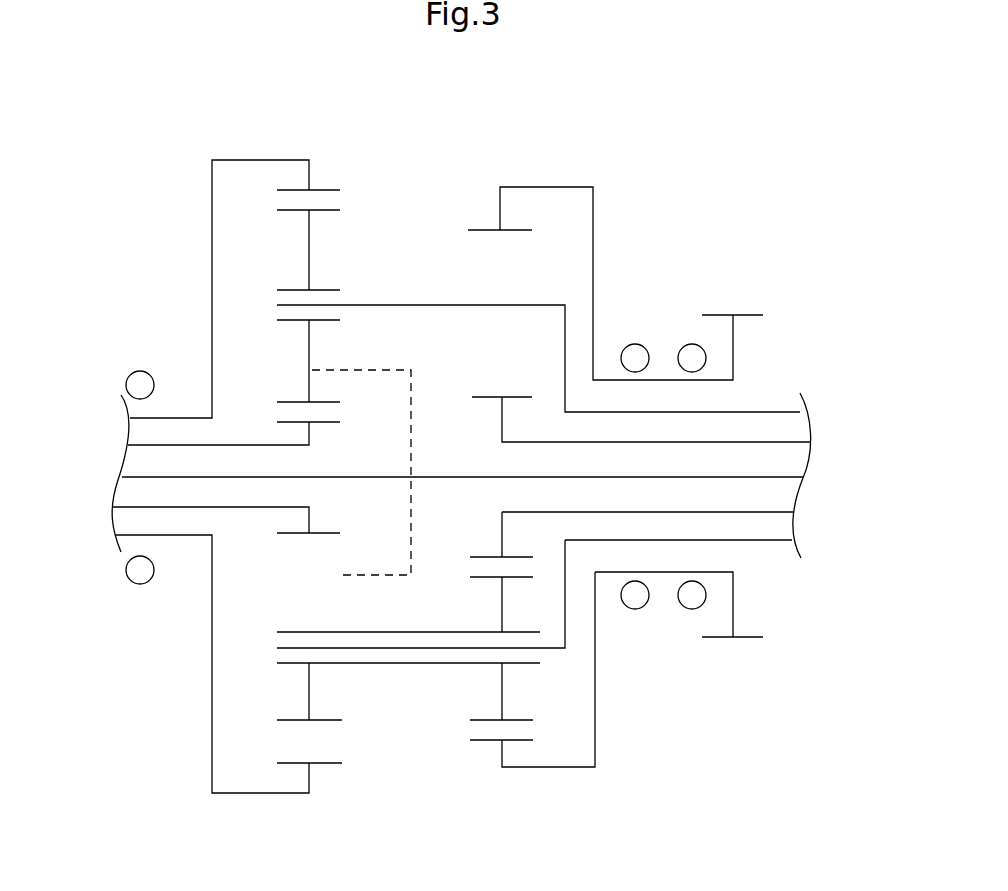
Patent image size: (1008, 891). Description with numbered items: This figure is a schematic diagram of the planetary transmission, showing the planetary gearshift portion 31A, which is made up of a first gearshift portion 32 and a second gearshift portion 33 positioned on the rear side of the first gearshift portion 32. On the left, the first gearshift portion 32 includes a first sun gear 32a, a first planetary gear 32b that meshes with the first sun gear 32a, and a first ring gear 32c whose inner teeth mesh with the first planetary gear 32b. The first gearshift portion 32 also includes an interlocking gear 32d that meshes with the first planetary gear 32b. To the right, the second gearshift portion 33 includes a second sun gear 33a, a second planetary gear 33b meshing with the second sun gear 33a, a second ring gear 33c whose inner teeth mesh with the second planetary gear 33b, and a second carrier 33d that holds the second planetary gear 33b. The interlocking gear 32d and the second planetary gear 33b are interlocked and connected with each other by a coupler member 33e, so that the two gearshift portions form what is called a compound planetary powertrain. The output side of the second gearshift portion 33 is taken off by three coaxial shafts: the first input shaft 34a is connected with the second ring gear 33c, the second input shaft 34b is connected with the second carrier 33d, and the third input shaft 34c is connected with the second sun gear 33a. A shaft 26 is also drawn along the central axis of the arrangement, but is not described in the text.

The planetary gearshift portion 31A is at (440, 115).
The first gearshift portion 32 is at (150, 152).
The first sun gear 32a is at (310, 432).
The first planetary gear 32b is at (310, 340).
The first ring gear 32c is at (313, 168).
The interlocking gear 32d is at (312, 692).
The second gearshift portion 33 is at (593, 153).
The second sun gear 33a is at (500, 547).
The second planetary gear 33b is at (500, 613).
The second ring gear 33c is at (502, 752).
The second carrier 33d is at (437, 305).
The coupler member 33e is at (418, 665).
The first input shaft 34a is at (663, 380).
The second input shaft 34b is at (758, 542).
The third input shaft 34c is at (793, 438).
The shaft 26 is at (748, 475).